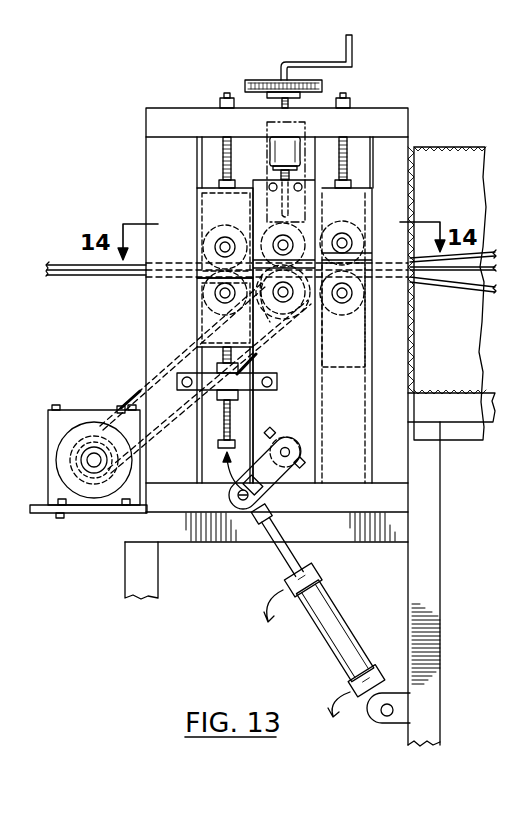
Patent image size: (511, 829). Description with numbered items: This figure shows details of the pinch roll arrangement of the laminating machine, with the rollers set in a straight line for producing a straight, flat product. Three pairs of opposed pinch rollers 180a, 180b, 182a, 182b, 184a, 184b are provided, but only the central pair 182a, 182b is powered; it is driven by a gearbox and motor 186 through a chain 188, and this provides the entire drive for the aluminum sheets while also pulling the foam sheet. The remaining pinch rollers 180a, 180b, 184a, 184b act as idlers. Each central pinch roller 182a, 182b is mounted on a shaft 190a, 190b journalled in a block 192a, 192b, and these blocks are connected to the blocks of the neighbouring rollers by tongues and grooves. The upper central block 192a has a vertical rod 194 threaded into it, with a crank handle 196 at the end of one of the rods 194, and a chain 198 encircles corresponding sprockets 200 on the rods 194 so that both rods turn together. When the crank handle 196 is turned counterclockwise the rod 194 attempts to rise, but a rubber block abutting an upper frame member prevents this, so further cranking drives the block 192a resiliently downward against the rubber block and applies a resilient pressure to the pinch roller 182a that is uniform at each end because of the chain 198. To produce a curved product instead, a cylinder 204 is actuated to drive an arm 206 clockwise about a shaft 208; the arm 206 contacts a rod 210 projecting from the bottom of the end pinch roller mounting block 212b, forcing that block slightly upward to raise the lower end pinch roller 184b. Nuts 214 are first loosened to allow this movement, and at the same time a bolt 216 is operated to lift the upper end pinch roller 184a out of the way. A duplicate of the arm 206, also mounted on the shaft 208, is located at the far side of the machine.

The pinch roller 180a is at (345, 227).
The pinch roller 180b is at (345, 306).
The pinch roller 182a is at (225, 233).
The pinch roller 182b is at (346, 315).
The pinch roller 184a is at (206, 247).
The pinch roller 184b is at (206, 292).
The gearbox and motor 186 is at (73, 418).
The chain 188 is at (136, 392).
The shaft 190a is at (273, 242).
The shaft 190b is at (287, 303).
The block 192a is at (306, 142).
The block 192b is at (311, 302).
The vertical rod 194 is at (282, 101).
The crank handle 196 is at (313, 60).
The chain 198 is at (323, 88).
The sprocket 200 is at (310, 79).
The cylinder 204 is at (333, 624).
The arm 206 is at (267, 473).
The shaft 208 is at (296, 436).
The rod 210 is at (218, 446).
The mounting block 212b is at (212, 308).
The nuts 214 is at (240, 362).
The bolt 216 is at (222, 160).